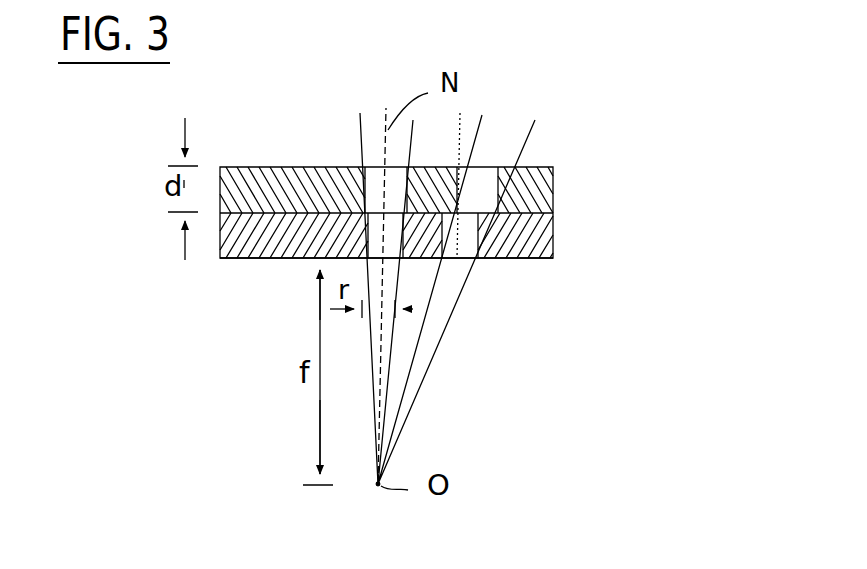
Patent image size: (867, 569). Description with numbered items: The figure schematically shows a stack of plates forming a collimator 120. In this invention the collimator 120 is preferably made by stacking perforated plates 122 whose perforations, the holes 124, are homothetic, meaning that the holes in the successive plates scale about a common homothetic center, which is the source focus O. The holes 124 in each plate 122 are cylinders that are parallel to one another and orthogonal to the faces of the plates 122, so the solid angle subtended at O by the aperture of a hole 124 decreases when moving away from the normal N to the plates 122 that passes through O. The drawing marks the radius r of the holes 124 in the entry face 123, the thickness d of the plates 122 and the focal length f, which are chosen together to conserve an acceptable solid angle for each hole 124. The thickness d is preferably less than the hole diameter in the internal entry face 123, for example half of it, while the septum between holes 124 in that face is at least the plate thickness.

The collimator 120 is at (404, 227).
The perforated plate 122 is at (540, 193).
The entry face 123 is at (230, 265).
The hole 124 is at (367, 185).